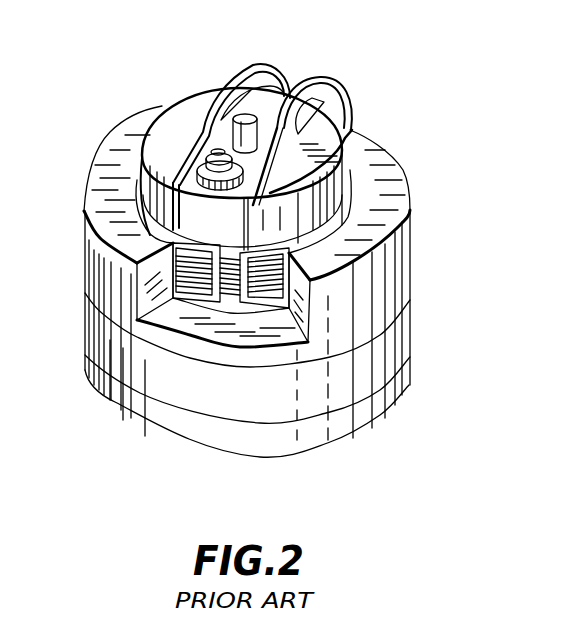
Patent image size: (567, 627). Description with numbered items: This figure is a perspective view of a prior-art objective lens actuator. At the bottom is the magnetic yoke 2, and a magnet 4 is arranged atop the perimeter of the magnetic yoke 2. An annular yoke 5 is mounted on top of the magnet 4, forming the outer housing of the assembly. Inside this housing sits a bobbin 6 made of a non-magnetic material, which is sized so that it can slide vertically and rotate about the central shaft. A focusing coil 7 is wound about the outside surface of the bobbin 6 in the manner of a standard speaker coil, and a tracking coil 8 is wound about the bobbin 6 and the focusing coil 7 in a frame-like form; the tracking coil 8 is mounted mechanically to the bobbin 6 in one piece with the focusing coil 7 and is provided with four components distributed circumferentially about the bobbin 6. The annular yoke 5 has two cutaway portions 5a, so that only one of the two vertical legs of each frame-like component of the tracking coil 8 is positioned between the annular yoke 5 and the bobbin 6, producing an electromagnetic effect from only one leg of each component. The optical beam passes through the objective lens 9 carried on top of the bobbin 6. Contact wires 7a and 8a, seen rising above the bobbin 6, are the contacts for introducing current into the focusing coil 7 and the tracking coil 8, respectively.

The magnetic yoke 2 is at (113, 393).
The magnet 4 is at (86, 333).
The annular yoke 5 is at (95, 260).
The cutaway portion 5a is at (202, 337).
The bobbin 6 is at (323, 132).
The focusing coil 7 is at (230, 302).
The contact wire 7a is at (233, 65).
The tracking coil 8 is at (195, 288).
The contact wire 8a is at (327, 82).
The objective lens 9 is at (217, 150).